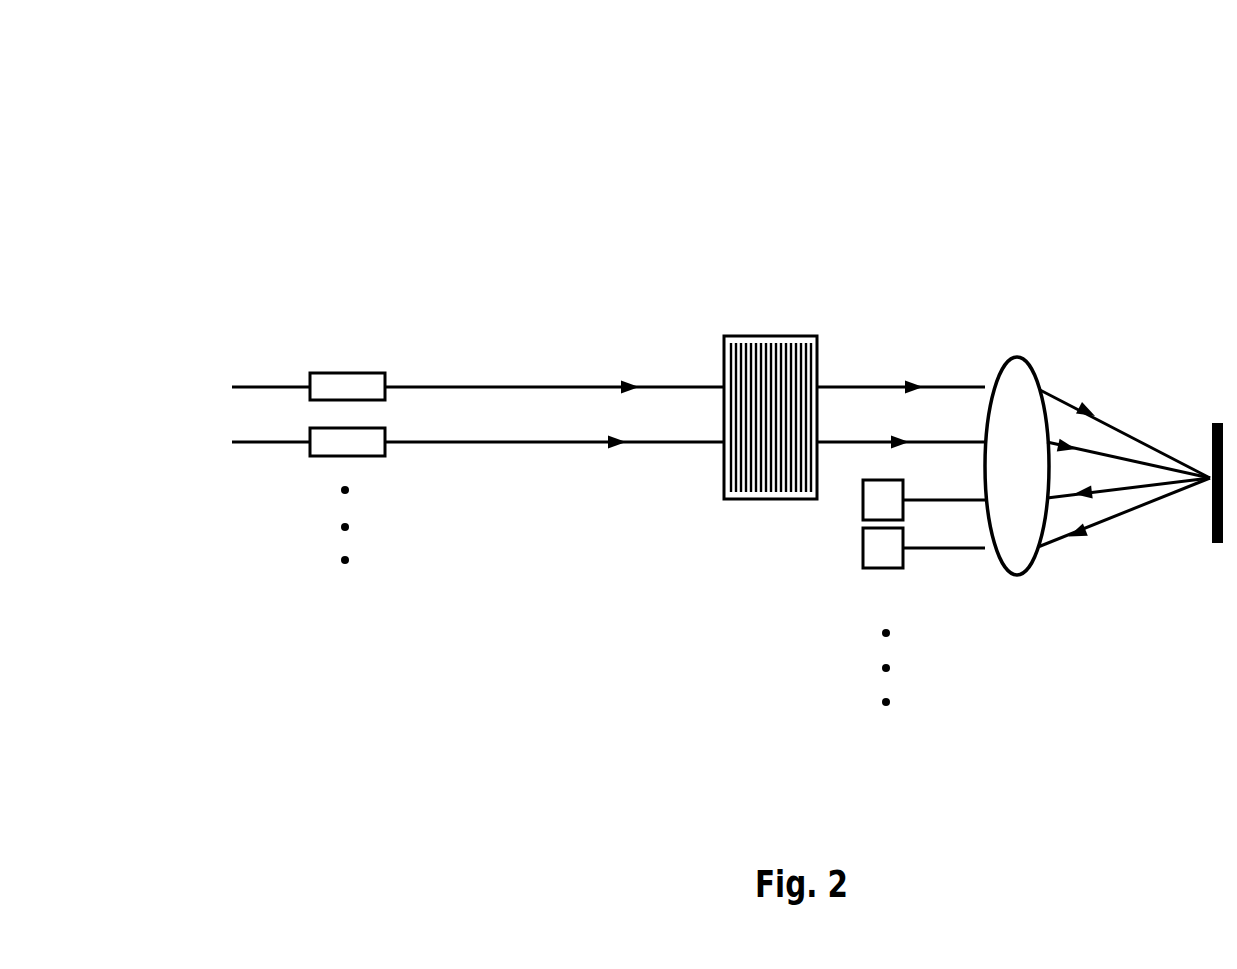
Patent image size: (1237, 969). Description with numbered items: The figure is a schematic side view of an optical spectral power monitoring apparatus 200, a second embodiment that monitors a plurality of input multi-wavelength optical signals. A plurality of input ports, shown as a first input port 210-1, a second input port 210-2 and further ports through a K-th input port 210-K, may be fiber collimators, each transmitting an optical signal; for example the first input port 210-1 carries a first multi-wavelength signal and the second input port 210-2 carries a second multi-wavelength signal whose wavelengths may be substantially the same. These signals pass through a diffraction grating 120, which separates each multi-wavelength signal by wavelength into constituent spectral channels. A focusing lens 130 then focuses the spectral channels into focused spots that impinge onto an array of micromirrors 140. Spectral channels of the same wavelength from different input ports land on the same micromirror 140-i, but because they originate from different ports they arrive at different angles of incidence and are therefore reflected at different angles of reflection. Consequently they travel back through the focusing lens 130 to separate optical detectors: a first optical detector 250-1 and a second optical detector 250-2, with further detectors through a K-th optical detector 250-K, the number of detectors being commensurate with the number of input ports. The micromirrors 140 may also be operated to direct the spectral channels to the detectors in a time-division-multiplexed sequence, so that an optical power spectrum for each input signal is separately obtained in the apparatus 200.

The optical spectral power monitoring apparatus 200 is at (305, 113).
The first input port 210-1 is at (343, 371).
The second input port 210-2 is at (316, 457).
The K-th input port 210-K is at (343, 560).
The diffraction grating 120 is at (765, 336).
The focusing lens 130 is at (1015, 353).
The array of micromirrors 140 is at (1215, 562).
The micromirror 140-i is at (1208, 473).
The first optical detector 250-1 is at (863, 500).
The second optical detector 250-2 is at (863, 548).
The K-th optical detector 250-K is at (886, 702).